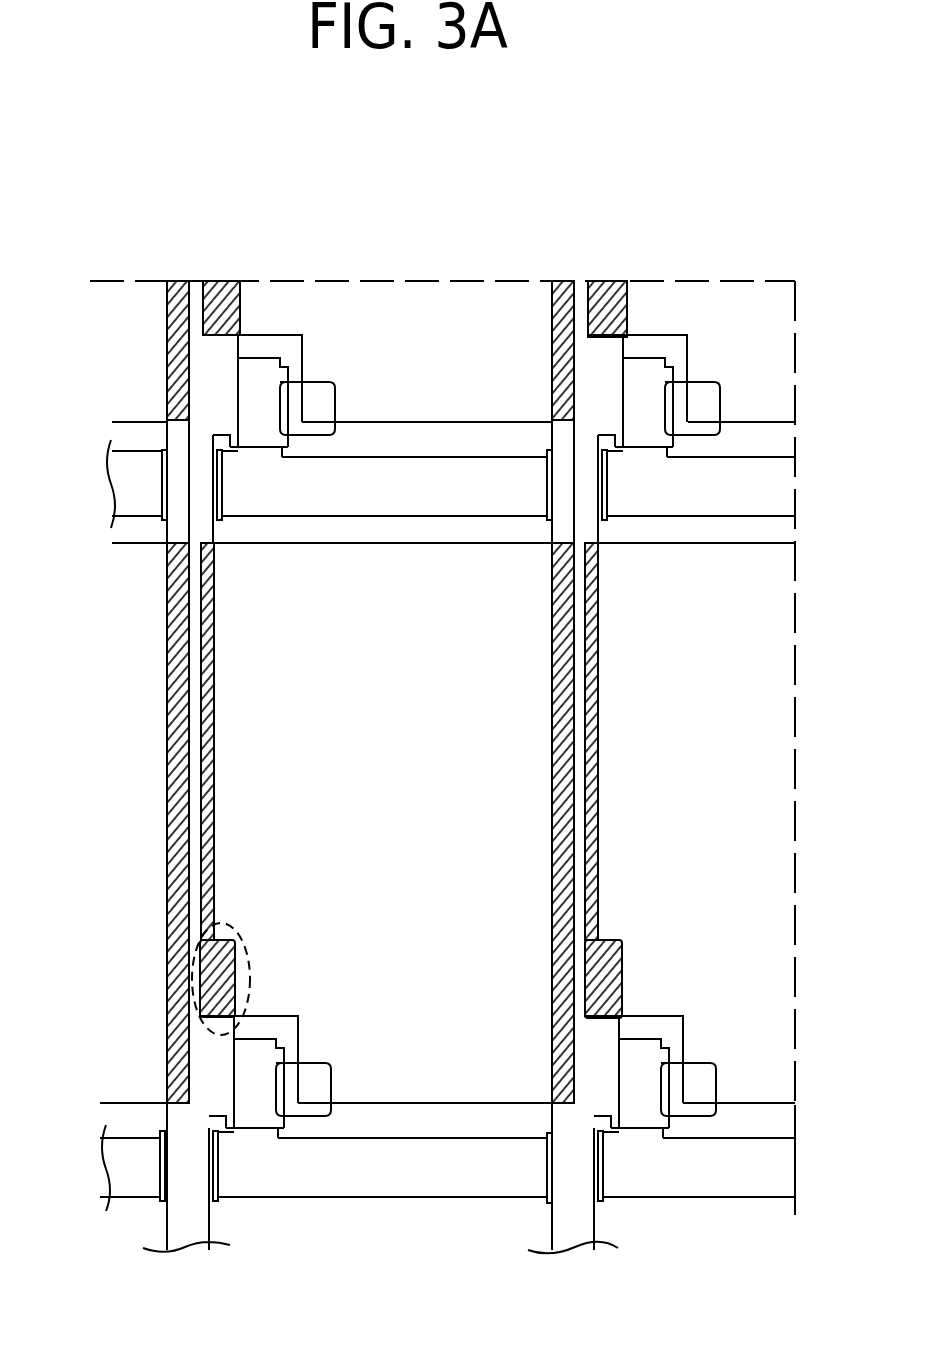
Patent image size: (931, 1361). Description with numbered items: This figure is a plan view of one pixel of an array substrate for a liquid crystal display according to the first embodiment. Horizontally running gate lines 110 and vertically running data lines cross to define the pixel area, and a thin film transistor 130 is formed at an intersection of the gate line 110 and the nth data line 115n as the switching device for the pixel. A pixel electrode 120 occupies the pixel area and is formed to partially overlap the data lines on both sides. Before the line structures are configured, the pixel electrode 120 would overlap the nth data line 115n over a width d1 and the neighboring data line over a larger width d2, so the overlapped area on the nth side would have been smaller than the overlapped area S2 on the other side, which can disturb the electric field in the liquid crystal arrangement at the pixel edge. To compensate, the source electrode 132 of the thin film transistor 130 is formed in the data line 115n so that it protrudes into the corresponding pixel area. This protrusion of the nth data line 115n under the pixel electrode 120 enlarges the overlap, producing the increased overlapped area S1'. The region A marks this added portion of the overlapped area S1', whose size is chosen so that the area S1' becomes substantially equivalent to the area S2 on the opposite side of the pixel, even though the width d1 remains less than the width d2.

The gate line 110 is at (395, 1167).
The pixel electrode 120 is at (460, 1077).
The thin film transistor 130 is at (259, 1095).
The source electrode 132 is at (223, 1100).
The nth data line 115n is at (180, 1225).
The overlapped area of the nth data line and the pixel electrode after configuration S1' is at (262, 610).
The overlapped area of the n+1th data line and the pixel electrode S2 is at (557, 745).
The region of increase of the overlapped area A is at (234, 924).
The width of overlap of pixel electrode with the nth data line d1 is at (157, 648).
The width of overlap of pixel electrode with the n+1th data line d2 is at (622, 663).